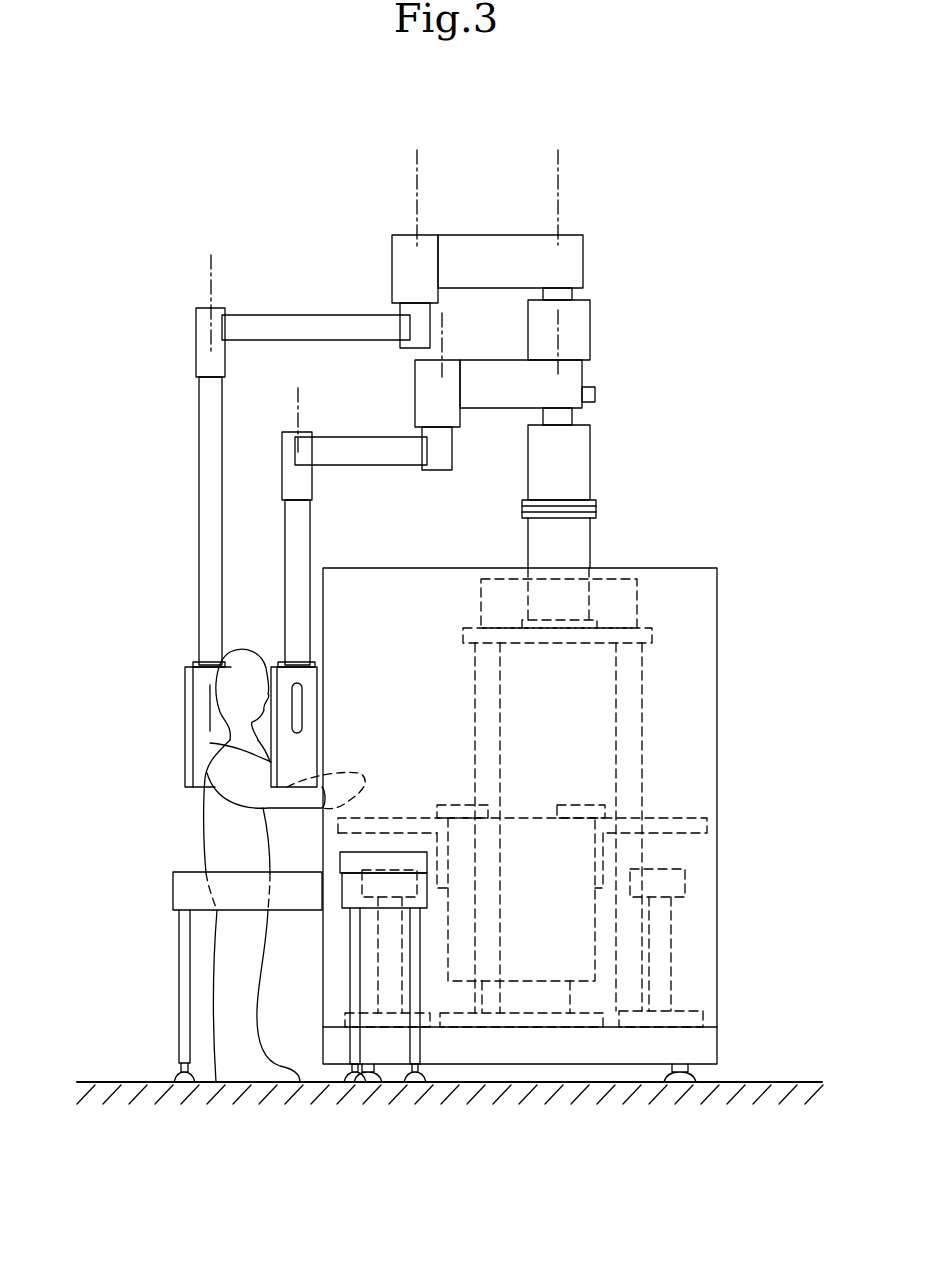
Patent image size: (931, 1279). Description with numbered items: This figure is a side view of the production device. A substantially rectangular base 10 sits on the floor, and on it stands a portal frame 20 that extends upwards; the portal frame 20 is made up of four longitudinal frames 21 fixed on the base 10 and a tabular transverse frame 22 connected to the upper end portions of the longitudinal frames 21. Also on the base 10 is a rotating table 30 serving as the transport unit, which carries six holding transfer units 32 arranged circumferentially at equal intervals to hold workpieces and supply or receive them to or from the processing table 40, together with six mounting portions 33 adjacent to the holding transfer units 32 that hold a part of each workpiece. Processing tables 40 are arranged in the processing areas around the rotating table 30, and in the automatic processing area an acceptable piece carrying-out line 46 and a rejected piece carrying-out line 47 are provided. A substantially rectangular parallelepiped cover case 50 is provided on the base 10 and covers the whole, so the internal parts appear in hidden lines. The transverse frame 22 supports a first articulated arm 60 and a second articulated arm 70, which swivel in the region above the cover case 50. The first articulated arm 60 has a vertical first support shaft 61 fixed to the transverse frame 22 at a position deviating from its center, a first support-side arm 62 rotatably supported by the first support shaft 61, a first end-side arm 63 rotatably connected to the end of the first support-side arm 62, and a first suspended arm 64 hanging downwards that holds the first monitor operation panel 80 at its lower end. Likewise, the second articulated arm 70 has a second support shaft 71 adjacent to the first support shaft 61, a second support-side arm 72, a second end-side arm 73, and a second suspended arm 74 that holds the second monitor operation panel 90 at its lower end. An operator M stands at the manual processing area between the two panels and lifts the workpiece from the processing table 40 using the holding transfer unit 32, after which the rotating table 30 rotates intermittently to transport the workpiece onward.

The base 10 is at (720, 1040).
The portal frame 20 is at (645, 670).
The longitudinal frames 21 is at (500, 716).
The transverse frame 22 is at (611, 625).
The rotating table 30 is at (528, 817).
The holding transfer units 32 is at (400, 816).
The mounting portions 33 is at (455, 804).
The processing table 40 is at (362, 870).
The acceptable piece carrying-out line 46 is at (177, 873).
The rejected piece carrying-out line 47 is at (338, 862).
The cover case 50 is at (715, 568).
The first articulated arm 60 is at (475, 212).
The first support shaft 61 is at (572, 296).
The first support-side arm 62 is at (508, 246).
The first end-side arm 63 is at (350, 326).
The first suspended arm 64 is at (203, 421).
The second articulated arm 70 is at (490, 422).
The second support shaft 71 is at (570, 420).
The second support-side arm 72 is at (497, 372).
The second end-side arm 73 is at (375, 446).
The second suspended arm 74 is at (303, 523).
The first monitor operation panel 80 is at (185, 680).
The second monitor operation panel 90 is at (305, 740).
The operator M is at (205, 816).